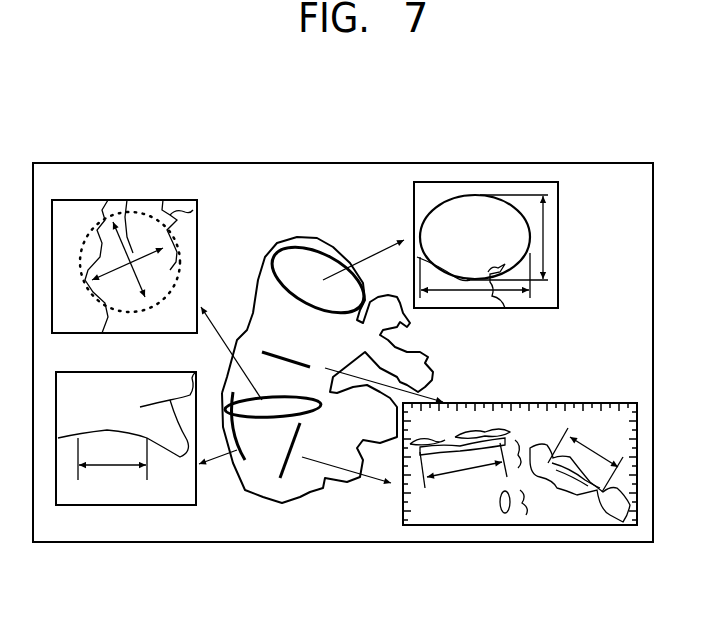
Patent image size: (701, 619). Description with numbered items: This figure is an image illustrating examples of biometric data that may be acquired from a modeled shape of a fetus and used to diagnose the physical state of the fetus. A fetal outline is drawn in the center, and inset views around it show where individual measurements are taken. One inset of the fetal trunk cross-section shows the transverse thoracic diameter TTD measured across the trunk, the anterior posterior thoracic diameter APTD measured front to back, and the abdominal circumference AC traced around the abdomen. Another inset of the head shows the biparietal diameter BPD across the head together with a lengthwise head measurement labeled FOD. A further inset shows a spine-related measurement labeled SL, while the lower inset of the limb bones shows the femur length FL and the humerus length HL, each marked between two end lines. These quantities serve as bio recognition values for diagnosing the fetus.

The transverse thoracic diameter TTD is at (124, 250).
The anterior posterior thoracic diameter APTD is at (188, 258).
The abdominal circumference AC is at (149, 215).
The spine length (n-6-3) measurement SL is at (126, 438).
The biparietal diameter BPD is at (505, 245).
The fronto-occipital diameter measurement FOD is at (475, 295).
The femur length FL is at (465, 471).
The humerus length HL is at (575, 465).